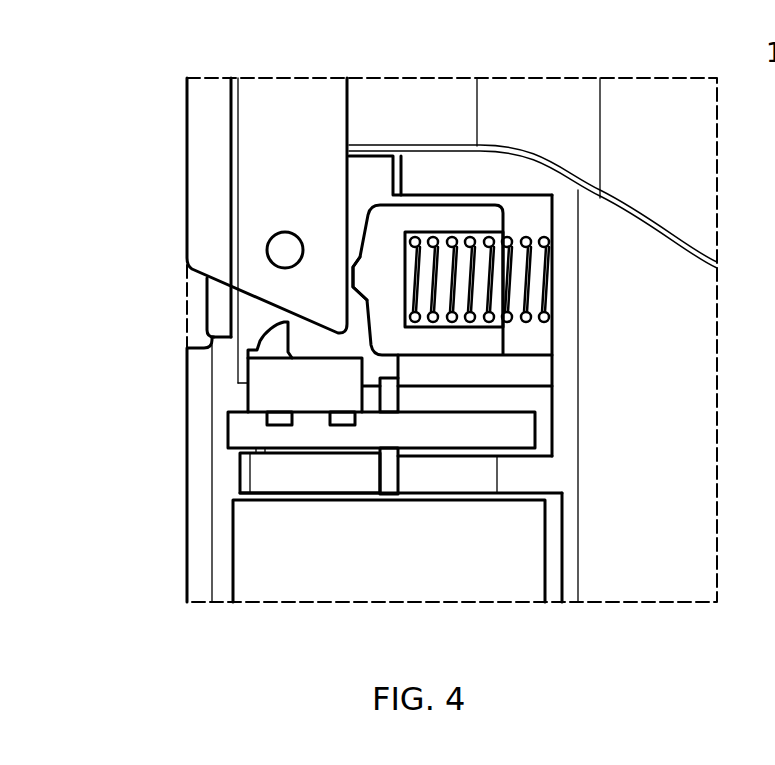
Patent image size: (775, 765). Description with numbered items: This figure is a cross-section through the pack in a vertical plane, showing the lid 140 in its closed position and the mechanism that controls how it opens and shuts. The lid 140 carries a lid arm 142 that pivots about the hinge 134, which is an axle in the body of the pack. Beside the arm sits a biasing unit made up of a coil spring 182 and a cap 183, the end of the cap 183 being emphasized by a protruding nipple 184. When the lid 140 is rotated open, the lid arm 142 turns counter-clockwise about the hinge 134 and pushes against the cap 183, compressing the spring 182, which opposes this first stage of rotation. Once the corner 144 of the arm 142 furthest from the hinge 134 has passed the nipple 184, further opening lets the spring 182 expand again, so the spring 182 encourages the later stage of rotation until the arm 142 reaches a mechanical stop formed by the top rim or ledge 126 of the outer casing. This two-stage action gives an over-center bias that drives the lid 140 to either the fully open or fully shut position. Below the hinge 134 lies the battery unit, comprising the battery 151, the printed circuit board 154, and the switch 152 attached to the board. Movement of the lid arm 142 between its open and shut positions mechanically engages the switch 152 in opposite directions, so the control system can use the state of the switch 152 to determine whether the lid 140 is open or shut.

The lid 140 is at (400, 103).
The lid arm 142 is at (270, 185).
The hinge 134 is at (267, 250).
The top rim or ledge 126 is at (207, 342).
The corner 144 is at (337, 323).
The switch 152 is at (305, 390).
The printed circuit board 154 is at (447, 435).
The battery 151 is at (308, 575).
The cap 183 is at (432, 225).
The nipple 184 is at (355, 272).
The coil spring 182 is at (528, 233).